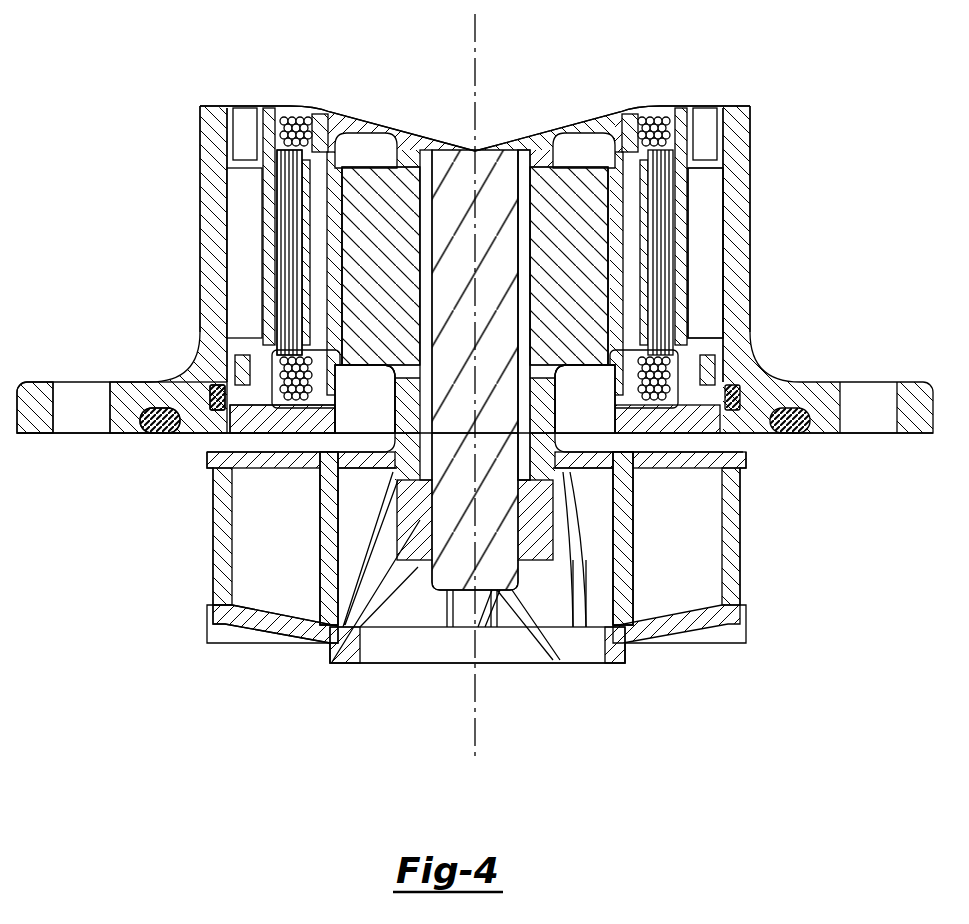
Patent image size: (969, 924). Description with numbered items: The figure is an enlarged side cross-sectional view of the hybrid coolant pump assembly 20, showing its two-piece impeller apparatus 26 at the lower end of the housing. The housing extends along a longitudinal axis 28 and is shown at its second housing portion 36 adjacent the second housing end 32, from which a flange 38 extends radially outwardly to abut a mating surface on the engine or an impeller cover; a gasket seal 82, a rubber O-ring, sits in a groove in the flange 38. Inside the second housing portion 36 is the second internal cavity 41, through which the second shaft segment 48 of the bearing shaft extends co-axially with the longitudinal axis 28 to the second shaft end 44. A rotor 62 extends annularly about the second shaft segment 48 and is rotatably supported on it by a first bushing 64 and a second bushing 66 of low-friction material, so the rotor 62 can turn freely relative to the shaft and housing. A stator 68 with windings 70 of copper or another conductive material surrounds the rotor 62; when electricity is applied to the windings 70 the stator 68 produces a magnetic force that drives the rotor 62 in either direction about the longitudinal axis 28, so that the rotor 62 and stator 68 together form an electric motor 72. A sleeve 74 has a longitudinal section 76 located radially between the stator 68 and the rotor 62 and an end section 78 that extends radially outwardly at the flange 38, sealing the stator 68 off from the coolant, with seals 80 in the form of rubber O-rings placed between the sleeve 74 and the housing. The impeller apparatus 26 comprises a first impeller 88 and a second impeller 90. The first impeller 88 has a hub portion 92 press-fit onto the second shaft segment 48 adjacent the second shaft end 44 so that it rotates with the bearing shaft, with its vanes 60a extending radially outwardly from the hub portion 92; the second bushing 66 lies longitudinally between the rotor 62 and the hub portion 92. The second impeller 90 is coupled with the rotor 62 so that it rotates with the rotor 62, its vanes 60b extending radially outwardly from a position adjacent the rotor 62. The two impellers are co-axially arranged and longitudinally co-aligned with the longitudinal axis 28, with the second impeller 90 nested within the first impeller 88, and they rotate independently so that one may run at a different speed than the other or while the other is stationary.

The hybrid coolant pump assembly 20 is at (160, 97).
The impeller apparatus 26 is at (210, 660).
The longitudinal axis 28 is at (480, 30).
The second housing end 32 is at (112, 444).
The second housing portion 36 is at (215, 265).
The flange 38 is at (35, 385).
The second internal cavity 41 is at (350, 450).
The second shaft end 44 is at (458, 594).
The second shaft segment 48 is at (452, 175).
The vanes of the first impeller 60a is at (535, 607).
The vanes of the second impeller 60b is at (660, 568).
The rotor 62 is at (590, 253).
The first bushing 64 is at (522, 165).
The second bushing 66 is at (524, 445).
The stator 68 is at (697, 185).
The windings 70 is at (300, 125).
The electric motor 72 is at (770, 298).
The sleeve 74 is at (250, 440).
The longitudinal section 76 is at (335, 210).
The end section 78 is at (235, 420).
The seals 80 is at (217, 392).
The gasket seal 82 is at (158, 408).
The first impeller 88 is at (273, 628).
The second impeller 90 is at (330, 552).
The hub portion 92 is at (418, 545).